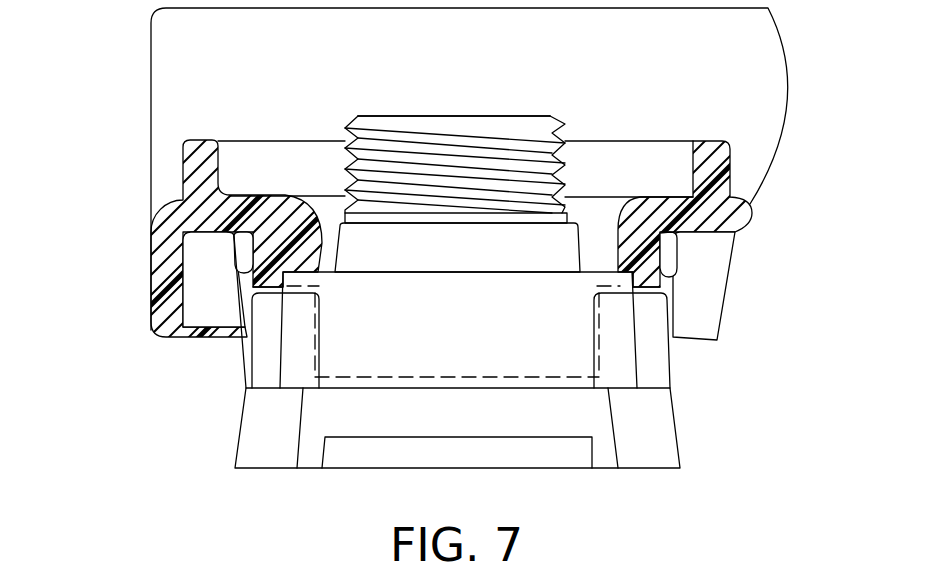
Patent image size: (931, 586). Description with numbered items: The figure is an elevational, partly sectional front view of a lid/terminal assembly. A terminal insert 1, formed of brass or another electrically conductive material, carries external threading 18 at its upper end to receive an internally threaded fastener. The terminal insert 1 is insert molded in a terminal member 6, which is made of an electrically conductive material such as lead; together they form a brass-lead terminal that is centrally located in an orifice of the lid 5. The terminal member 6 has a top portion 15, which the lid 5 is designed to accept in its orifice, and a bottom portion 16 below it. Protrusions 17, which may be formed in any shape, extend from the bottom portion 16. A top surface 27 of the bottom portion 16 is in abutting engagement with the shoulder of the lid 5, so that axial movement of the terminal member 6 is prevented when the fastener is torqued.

The terminal insert 1 is at (451, 115).
The lid 5 is at (150, 275).
The terminal member 6 is at (267, 470).
The top portion 15 is at (527, 252).
The bottom portion 16 is at (497, 330).
The protrusions 17 is at (265, 350).
The external threading 18 is at (562, 121).
The top surface 27 is at (291, 196).